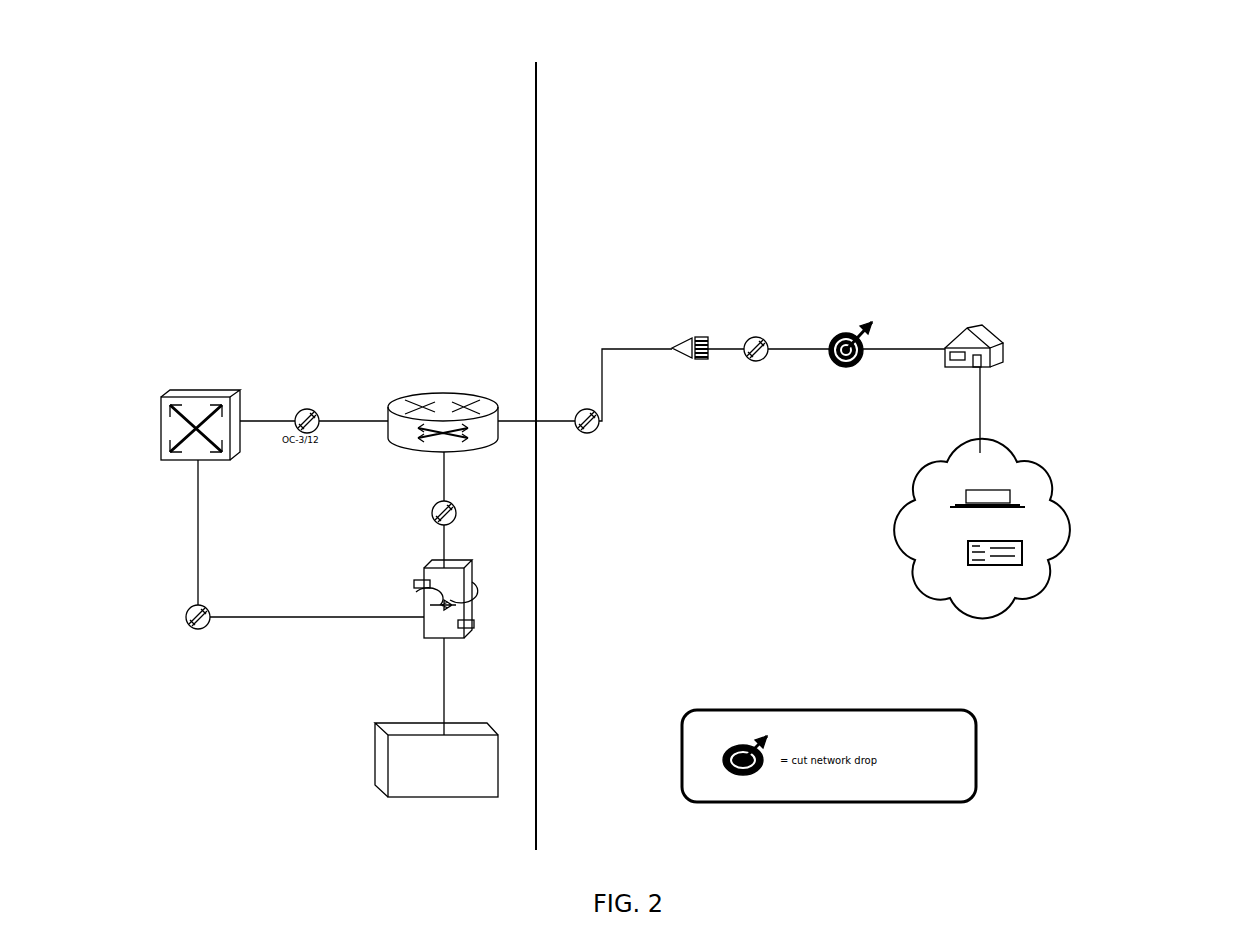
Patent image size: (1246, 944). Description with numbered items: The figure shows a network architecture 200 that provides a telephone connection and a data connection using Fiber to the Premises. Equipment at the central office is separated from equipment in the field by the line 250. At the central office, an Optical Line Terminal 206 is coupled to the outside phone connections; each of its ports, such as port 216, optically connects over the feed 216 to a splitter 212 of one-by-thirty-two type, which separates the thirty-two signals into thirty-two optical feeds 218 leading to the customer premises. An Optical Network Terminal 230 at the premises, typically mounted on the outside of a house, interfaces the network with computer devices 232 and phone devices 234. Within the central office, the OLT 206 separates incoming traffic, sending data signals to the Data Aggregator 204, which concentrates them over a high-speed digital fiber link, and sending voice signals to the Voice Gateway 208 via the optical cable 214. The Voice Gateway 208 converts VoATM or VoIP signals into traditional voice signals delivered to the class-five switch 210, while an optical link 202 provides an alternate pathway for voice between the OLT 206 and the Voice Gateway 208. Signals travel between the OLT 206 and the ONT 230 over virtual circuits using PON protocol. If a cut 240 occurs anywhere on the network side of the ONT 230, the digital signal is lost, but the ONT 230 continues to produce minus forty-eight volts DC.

The network architecture 200 is at (1103, 129).
The optical link 202 is at (190, 628).
The Data Aggregator 204 is at (188, 400).
The Optical Line Terminal (OLT) 206 is at (403, 398).
The Voice Gateway 208 is at (428, 632).
The Class 5 Switch 210 is at (395, 785).
The 1x32 splitter 212 is at (683, 341).
The optical cable 214 is at (452, 520).
The port (feed) 216 is at (595, 432).
The optical feeds 218 is at (759, 362).
The Optical Network Terminal (ONT) 230 is at (1003, 350).
The computer devices 232 is at (1000, 503).
The phone devices 234 is at (1022, 555).
The cut 240 is at (866, 333).
The line (separation between office and field equipment) 250 is at (531, 166).